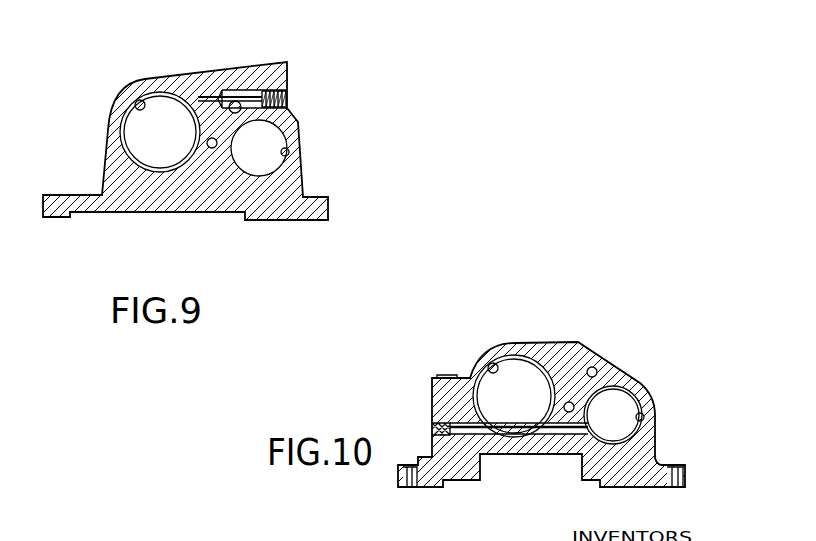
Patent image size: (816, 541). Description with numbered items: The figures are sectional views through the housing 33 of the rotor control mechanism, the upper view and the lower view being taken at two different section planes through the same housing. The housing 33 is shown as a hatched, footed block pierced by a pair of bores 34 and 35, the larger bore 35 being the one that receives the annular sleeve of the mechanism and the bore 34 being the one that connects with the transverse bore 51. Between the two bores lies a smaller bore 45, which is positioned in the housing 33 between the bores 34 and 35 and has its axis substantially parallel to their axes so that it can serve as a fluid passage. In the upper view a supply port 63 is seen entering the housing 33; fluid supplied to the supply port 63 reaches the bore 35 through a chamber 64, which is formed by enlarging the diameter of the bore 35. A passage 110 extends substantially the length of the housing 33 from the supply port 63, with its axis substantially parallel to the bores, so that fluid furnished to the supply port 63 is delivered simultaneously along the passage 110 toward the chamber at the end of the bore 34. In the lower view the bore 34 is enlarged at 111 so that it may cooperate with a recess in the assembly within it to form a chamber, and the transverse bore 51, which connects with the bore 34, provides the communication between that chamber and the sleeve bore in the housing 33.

In FIG. 9, the housing 33 is at (224, 215).
In FIG. 10, the housing 33 is at (459, 483).
In FIG. 9, the bore 34 is at (289, 152).
In FIG. 10, the bore 35 is at (496, 363).
In FIG. 9, the bore 45 is at (210, 149).
In FIG. 10, the bore 45 is at (568, 402).
In FIG. 10, the transverse bore 51 is at (557, 435).
In FIG. 9, the supply port 63 is at (289, 98).
In FIG. 9, the chamber 64 is at (140, 100).
In FIG. 9, the passage 110 is at (234, 100).
In FIG. 10, the passage 110 is at (596, 368).
In FIG. 10, the enlargement of bore 34 111 is at (644, 417).